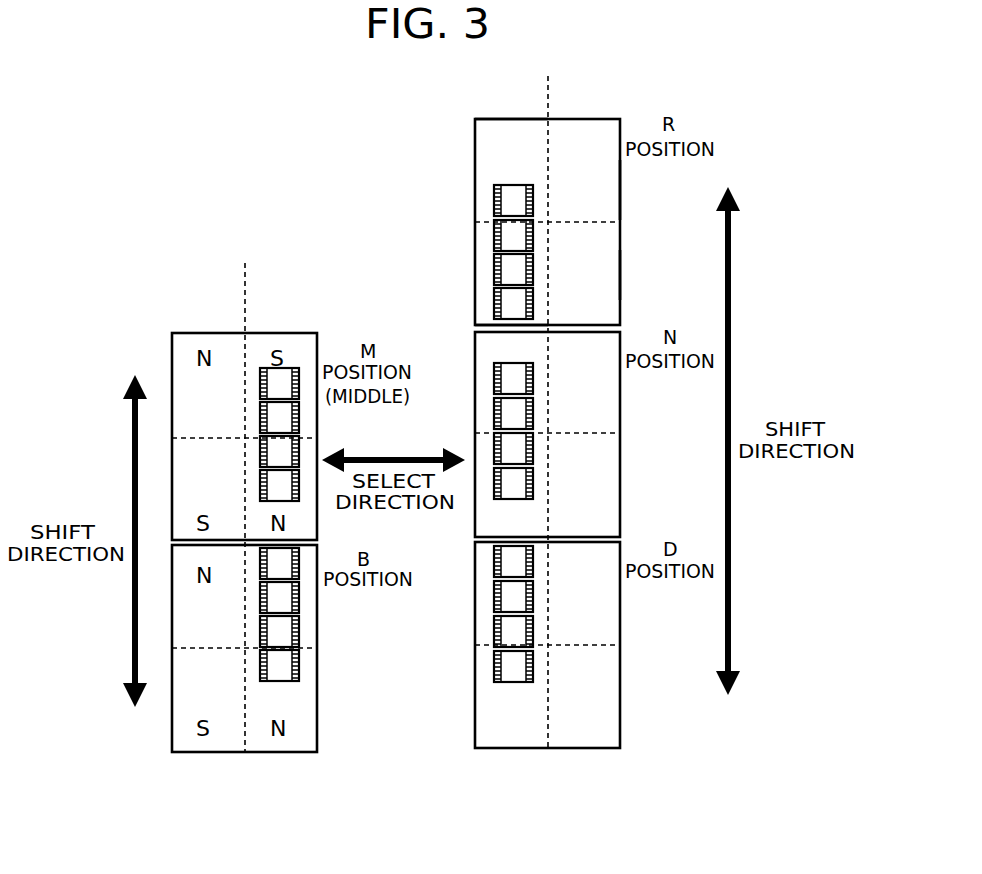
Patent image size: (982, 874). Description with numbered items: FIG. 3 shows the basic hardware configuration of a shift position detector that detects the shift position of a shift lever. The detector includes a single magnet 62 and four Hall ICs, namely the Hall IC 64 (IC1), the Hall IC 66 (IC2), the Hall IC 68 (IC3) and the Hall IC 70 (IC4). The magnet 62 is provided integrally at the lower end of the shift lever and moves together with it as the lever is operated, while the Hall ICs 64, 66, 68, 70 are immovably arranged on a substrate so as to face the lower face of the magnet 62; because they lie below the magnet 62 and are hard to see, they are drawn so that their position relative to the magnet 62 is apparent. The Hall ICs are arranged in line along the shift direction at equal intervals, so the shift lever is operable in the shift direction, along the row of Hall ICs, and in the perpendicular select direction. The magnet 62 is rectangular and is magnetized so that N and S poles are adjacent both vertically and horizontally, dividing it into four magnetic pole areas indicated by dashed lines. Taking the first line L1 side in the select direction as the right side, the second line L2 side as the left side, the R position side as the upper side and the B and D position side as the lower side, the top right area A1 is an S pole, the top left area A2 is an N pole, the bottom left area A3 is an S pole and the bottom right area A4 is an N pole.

The magnet 62 is at (587, 112).
The Hall IC 64 is at (510, 199).
The Hall IC 66 is at (510, 234).
The Hall IC 68 is at (510, 268).
The Hall IC 70 is at (510, 302).
The area A1 is at (602, 183).
The area A2 is at (488, 128).
The area A3 is at (490, 323).
The area A4 is at (605, 273).
The first line L1 is at (549, 90).
The second line L2 is at (246, 296).